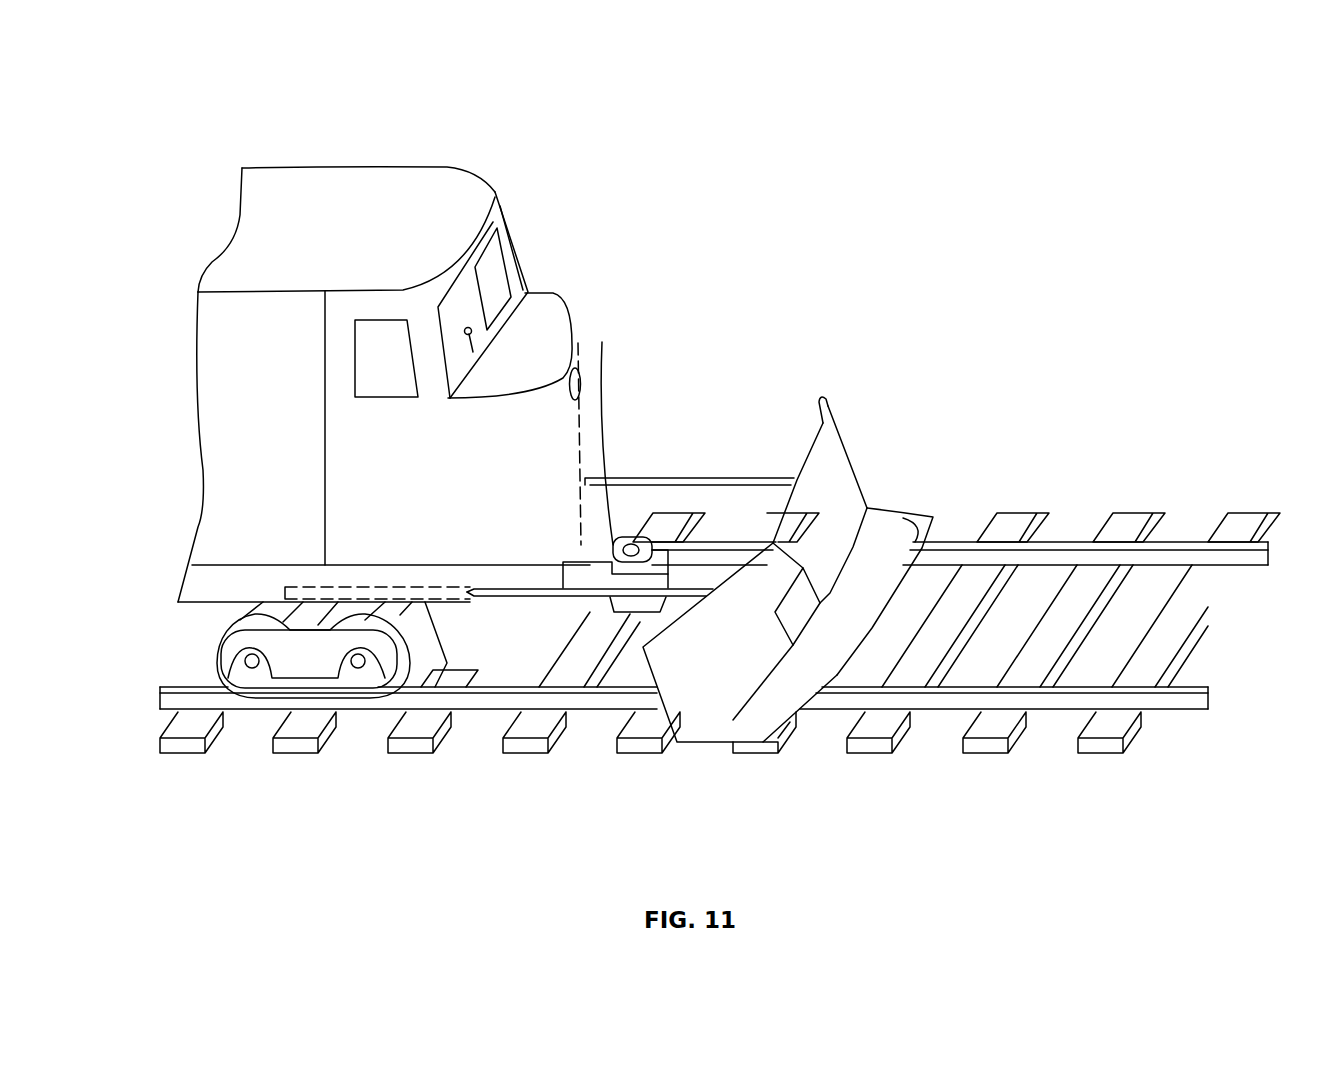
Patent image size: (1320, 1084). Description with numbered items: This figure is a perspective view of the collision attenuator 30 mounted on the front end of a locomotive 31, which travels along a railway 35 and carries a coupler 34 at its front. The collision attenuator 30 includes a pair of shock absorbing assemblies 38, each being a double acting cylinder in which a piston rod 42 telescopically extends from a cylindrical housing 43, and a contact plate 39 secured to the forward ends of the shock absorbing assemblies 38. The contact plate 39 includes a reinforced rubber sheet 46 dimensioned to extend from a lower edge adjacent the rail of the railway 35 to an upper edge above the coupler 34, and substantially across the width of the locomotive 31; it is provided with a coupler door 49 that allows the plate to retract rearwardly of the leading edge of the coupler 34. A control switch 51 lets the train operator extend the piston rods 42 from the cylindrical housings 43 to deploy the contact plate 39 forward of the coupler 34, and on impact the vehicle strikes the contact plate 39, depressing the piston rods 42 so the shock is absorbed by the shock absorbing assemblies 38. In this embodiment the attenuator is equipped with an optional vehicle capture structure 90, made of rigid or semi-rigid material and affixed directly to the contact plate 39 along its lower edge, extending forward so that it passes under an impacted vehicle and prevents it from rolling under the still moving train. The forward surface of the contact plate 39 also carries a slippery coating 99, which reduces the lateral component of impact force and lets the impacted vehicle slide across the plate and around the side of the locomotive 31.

The locomotive 31 is at (465, 158).
The control switch 51 is at (466, 316).
The coupler 34 is at (612, 540).
The shock absorbing assembly 38 is at (644, 466).
The piston rod 42 is at (705, 483).
The cylindrical housing 43 is at (388, 590).
The collision attenuator 30 is at (859, 521).
The contact plate 39 is at (852, 458).
The vehicle capture structure 90 is at (903, 517).
The slippery coating 99 is at (740, 642).
The reinforced rubber sheet 46 is at (724, 684).
The coupler door 49 is at (805, 639).
The railway 35 is at (1079, 530).